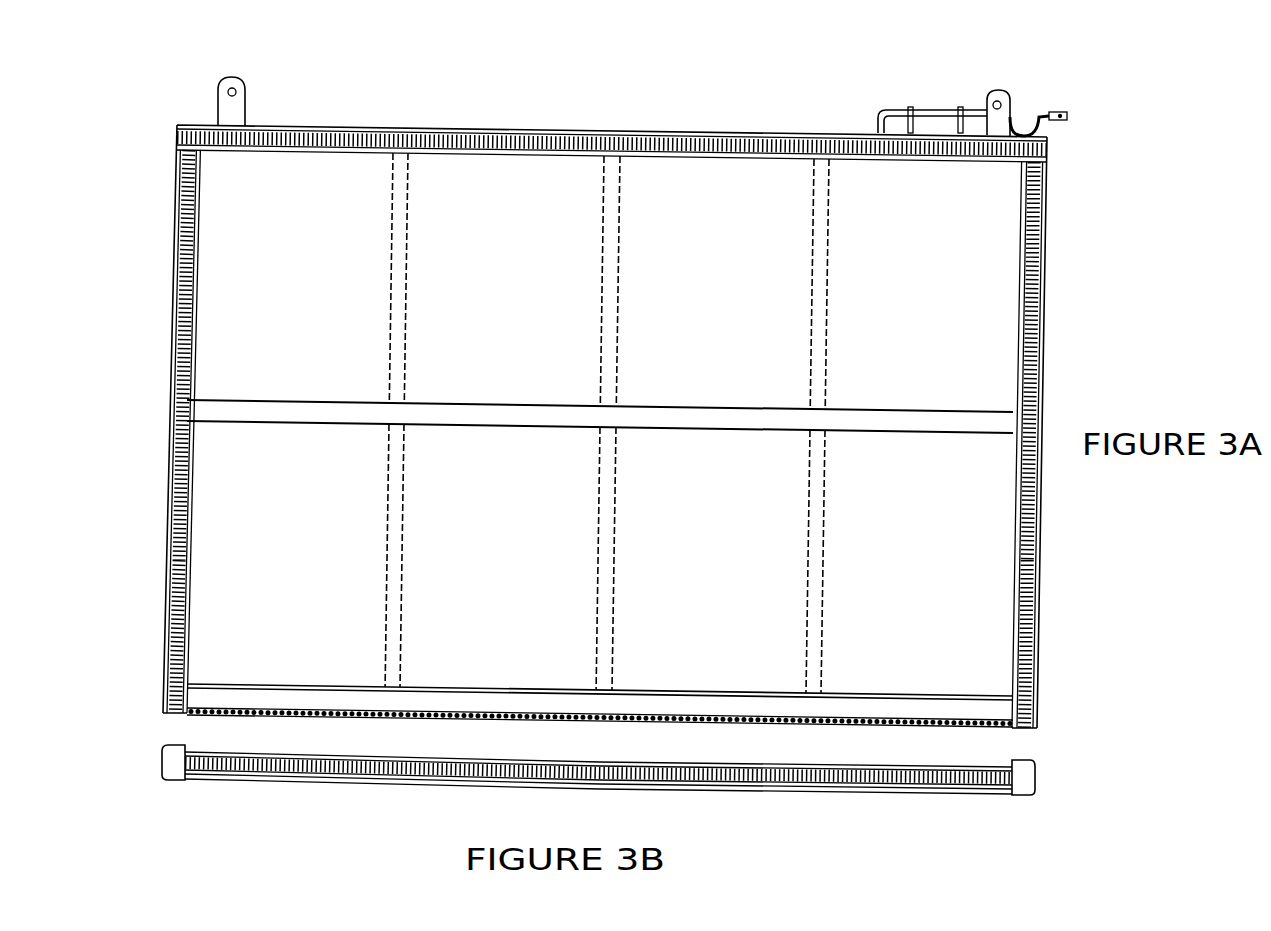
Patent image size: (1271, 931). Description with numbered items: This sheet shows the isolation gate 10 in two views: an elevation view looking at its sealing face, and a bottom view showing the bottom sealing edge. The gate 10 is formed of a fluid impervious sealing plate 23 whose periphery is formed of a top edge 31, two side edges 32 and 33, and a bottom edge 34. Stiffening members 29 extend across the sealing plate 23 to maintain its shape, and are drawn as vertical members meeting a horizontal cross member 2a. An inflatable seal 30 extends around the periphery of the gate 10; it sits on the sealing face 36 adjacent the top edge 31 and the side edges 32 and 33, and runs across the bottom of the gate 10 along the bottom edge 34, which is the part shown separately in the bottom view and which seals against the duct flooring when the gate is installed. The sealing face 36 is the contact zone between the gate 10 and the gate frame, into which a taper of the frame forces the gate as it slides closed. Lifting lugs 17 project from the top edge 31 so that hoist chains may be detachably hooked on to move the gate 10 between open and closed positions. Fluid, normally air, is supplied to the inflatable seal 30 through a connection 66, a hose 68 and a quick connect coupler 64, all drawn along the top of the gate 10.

In FIG. 3A, the gate 10 is at (1045, 272).
In FIG. 3A, the lifting lugs 17 is at (248, 82).
In FIG. 3A, the sealing plate 23 is at (968, 603).
In FIG. 3A, the stiffening members 29 is at (405, 190).
In FIG. 3A, the cross member 2a is at (972, 425).
In FIG. 3A, the inflatable seal 30 is at (175, 330).
In FIG. 3A, the top edge 31 is at (533, 128).
In FIG. 3A, the side edge 32 is at (173, 232).
In FIG. 3A, the side edge 33 is at (1045, 365).
In FIG. 3A, the bottom edge 34 is at (186, 713).
In FIG. 3B, the bottom edge 34 is at (865, 792).
In FIG. 3A, the sealing face 36 is at (170, 612).
In FIG. 3A, the quick connect coupling 64 is at (1067, 120).
In FIG. 3A, the connection 66 is at (878, 133).
In FIG. 3A, the hose 68 is at (1022, 118).